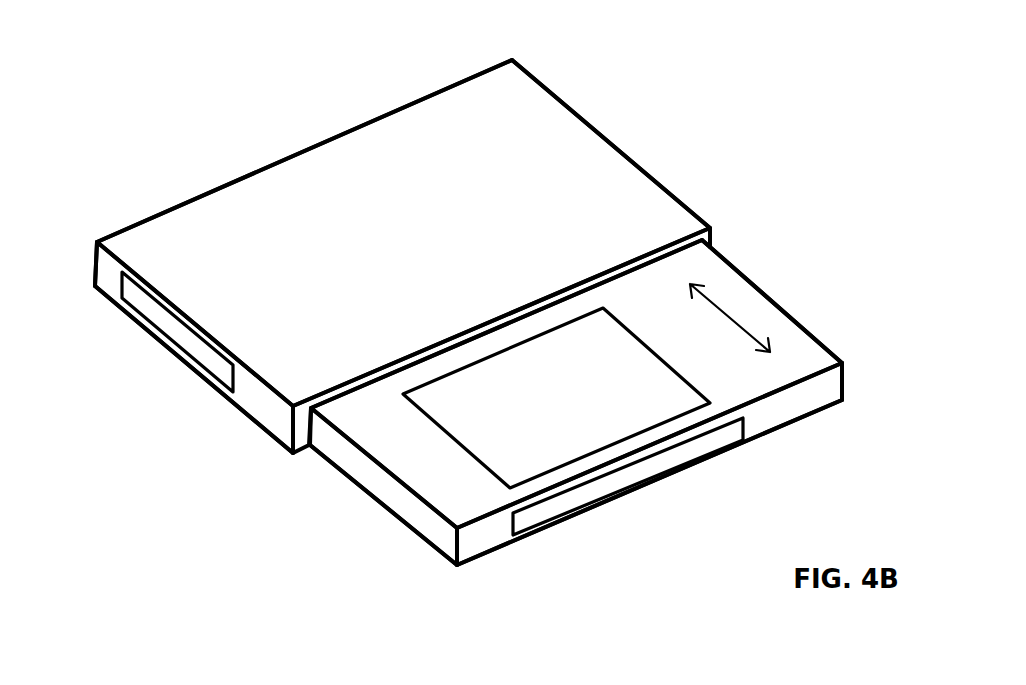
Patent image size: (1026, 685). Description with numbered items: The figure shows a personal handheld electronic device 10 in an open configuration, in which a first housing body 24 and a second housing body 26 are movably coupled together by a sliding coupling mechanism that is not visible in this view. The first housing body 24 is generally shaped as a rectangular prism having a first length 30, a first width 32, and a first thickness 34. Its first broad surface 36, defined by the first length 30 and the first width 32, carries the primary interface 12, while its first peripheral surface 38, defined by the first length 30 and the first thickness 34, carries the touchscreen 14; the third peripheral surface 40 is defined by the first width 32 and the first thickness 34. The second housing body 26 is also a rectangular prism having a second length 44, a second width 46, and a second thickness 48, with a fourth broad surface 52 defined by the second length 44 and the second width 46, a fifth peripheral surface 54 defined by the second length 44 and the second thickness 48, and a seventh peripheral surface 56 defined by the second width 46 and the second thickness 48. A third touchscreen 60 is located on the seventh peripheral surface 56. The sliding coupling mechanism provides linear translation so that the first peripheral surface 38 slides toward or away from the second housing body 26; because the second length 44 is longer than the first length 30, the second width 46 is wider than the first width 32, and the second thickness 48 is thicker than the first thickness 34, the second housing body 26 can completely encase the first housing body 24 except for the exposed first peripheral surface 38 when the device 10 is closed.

The personal handheld electronic device 10 is at (674, 71).
The primary interface 12 is at (556, 398).
The touchscreen 14 is at (728, 438).
The first housing body 24 is at (806, 324).
The second housing body 26 is at (688, 210).
The first length 30 is at (855, 421).
The first width 32 is at (432, 585).
The first thickness 34 is at (863, 362).
The first broad surface 36 is at (576, 384).
The first peripheral surface 38 is at (482, 550).
The third peripheral surface 40 is at (428, 532).
The second length 44 is at (495, 38).
The second width 46 is at (65, 317).
The second thickness 48 is at (78, 242).
The fourth broad surface 52 is at (403, 233).
The fifth peripheral surface 54 is at (303, 417).
The seventh peripheral surface 56 is at (194, 347).
The third touchscreen 60 is at (197, 347).